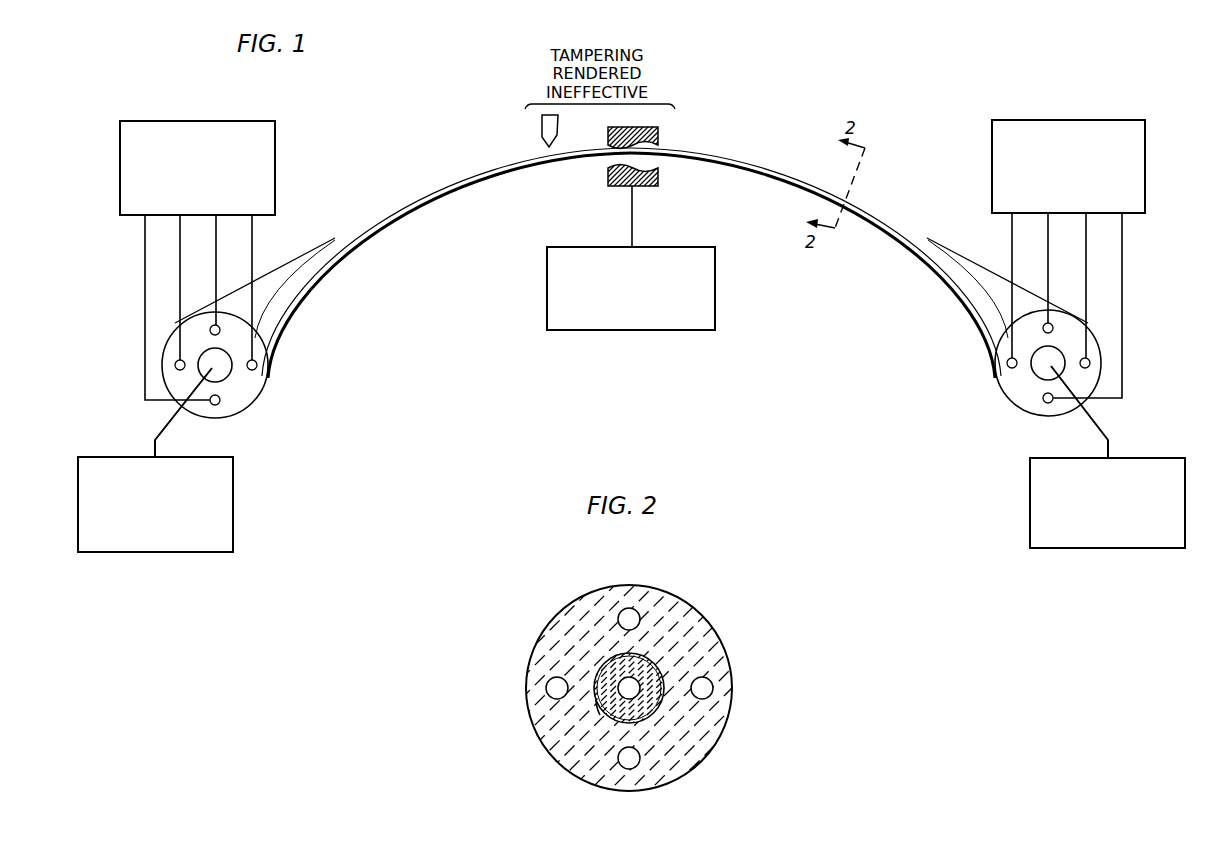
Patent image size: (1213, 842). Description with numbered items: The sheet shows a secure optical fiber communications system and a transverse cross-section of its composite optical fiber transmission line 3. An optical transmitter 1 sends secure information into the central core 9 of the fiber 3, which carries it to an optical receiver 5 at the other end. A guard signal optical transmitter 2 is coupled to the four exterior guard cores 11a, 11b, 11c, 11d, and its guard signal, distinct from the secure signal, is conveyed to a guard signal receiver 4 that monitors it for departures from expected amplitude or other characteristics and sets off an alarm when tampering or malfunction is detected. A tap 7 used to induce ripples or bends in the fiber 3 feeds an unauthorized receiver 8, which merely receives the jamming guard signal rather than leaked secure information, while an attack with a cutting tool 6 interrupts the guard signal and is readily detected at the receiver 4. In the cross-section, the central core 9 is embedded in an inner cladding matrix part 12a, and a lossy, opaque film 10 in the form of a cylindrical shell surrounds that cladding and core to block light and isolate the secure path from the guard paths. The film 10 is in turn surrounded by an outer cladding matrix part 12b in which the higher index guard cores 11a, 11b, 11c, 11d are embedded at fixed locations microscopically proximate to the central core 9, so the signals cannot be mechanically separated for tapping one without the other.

In FIG. 1, the optical transmitter 1 is at (78, 503).
In FIG. 1, the guard signal optical transmitter 2 is at (120, 163).
In FIG. 1, the composite optical fiber transmission line 3 is at (327, 262).
In FIG. 2, the composite optical fiber transmission line 3 is at (640, 680).
In FIG. 1, the guard signal receiver 4 is at (1145, 168).
In FIG. 1, the optical receiver 5 is at (1185, 507).
In FIG. 1, the cutting tool 6 is at (541, 122).
In FIG. 1, the tap 7 is at (658, 180).
In FIG. 1, the unauthorized receiver 8 is at (628, 330).
In FIG. 2, the central core 9 is at (622, 680).
In FIG. 1, the film 10 is at (253, 402).
In FIG. 2, the film 10 is at (605, 665).
In FIG. 2, the guard core 11a is at (546, 688).
In FIG. 2, the guard core 11b is at (630, 608).
In FIG. 2, the guard core 11c is at (713, 688).
In FIG. 2, the guard core 11d is at (634, 768).
In FIG. 2, the inner cladding matrix part 12a is at (596, 710).
In FIG. 2, the outer cladding matrix part 12b is at (708, 755).